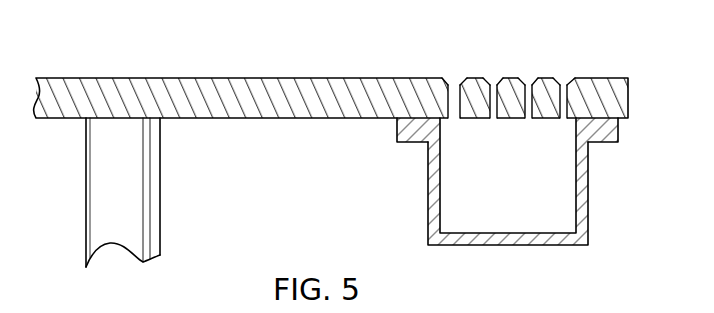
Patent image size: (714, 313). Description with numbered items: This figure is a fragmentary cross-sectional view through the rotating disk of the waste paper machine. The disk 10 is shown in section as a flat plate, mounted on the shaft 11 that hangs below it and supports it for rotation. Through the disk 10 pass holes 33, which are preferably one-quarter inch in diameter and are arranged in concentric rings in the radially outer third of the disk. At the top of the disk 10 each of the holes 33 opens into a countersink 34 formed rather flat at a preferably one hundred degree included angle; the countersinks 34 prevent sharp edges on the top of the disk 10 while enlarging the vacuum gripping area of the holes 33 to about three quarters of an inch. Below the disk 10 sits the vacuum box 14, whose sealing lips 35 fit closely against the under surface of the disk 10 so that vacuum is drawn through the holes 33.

The disk 10 is at (307, 77).
The shaft 11 is at (160, 190).
The vacuum box 14 is at (440, 208).
The holes 33 is at (493, 118).
The countersinks 34 is at (560, 77).
The sealing lips 35 is at (397, 136).